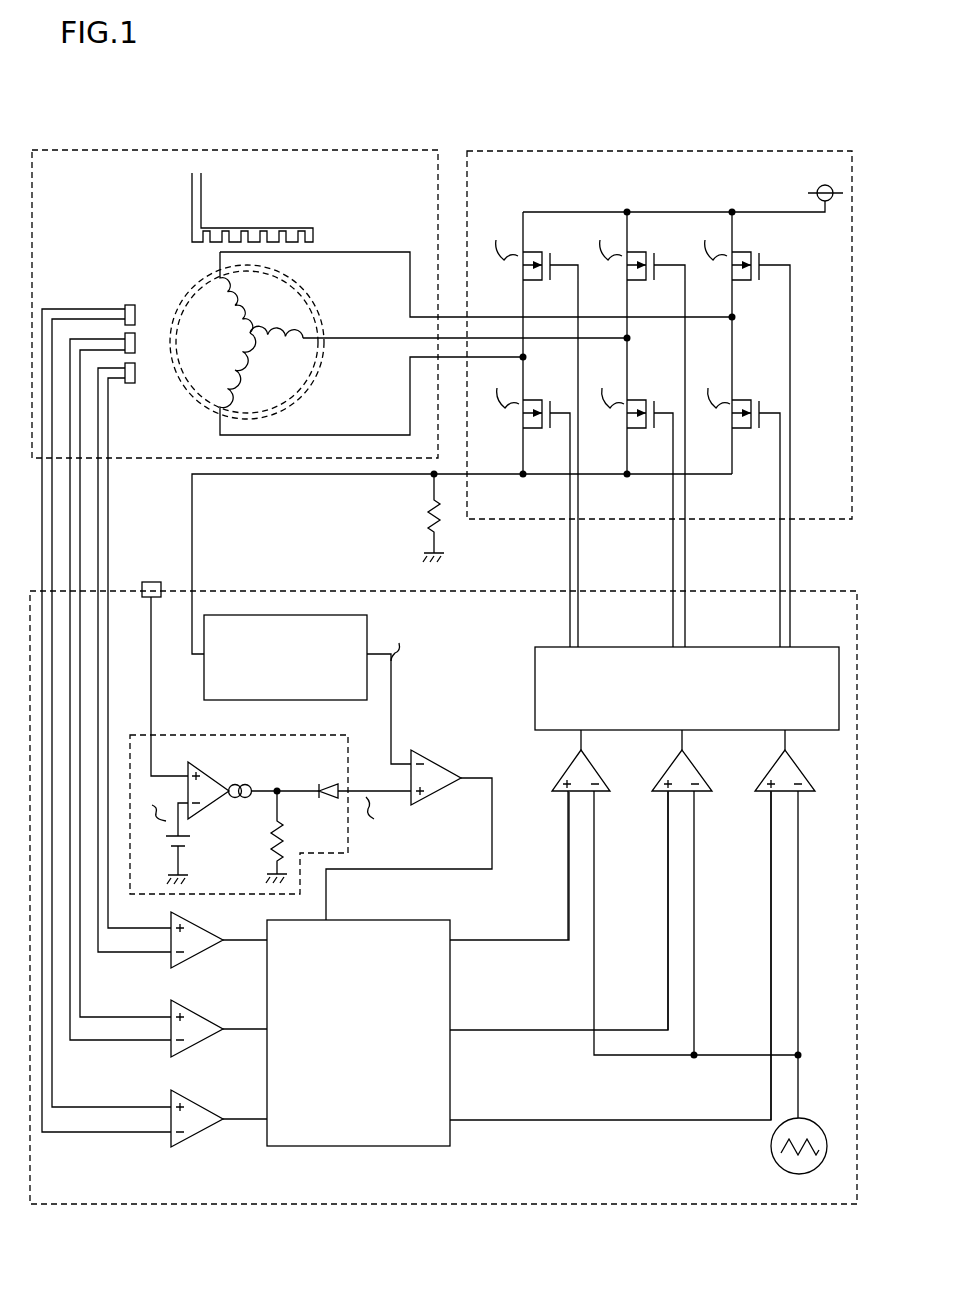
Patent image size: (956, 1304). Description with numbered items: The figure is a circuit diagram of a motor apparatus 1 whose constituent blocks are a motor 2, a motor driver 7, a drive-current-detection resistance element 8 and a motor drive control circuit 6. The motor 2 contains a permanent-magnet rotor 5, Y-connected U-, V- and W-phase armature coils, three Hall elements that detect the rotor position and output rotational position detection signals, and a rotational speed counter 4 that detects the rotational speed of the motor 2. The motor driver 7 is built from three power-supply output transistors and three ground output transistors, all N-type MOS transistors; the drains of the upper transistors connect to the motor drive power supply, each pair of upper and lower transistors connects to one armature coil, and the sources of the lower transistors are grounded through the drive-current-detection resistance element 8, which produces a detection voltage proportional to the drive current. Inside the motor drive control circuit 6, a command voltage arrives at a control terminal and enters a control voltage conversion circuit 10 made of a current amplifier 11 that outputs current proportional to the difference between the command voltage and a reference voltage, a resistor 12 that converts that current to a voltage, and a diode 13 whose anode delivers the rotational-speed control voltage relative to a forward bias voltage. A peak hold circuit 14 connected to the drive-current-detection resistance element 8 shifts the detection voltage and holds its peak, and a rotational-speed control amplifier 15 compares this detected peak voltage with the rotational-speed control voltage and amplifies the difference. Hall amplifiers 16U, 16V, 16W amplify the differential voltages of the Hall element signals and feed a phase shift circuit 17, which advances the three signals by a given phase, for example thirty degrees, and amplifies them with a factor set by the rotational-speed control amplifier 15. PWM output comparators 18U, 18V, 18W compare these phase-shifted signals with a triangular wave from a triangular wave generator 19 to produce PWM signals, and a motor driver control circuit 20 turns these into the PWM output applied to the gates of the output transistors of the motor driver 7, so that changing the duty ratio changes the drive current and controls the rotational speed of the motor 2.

The motor apparatus 1 is at (458, 119).
The motor 2 is at (250, 152).
The rotational speed counter 4 is at (310, 232).
The rotor 5 is at (196, 402).
The motor drive control circuit 6 is at (357, 589).
The motor driver 7 is at (856, 318).
The drive-current-detection resistance element 8 is at (410, 518).
The control voltage conversion circuit 10 is at (345, 735).
The current amplifier 11 is at (221, 772).
The resistor 12 is at (267, 840).
The diode 13 is at (320, 782).
The peak hold circuit 14 is at (329, 615).
The rotational-speed control amplifier 15 is at (445, 756).
The Hall amplifier 16U is at (202, 924).
The Hall amplifier 16V is at (202, 1014).
The Hall amplifier 16W is at (199, 1104).
The phase shift circuit 17 is at (303, 1147).
The PWM output comparator 18U is at (606, 794).
The PWM output comparator 18V is at (707, 794).
The PWM output comparator 18W is at (810, 794).
The triangular wave generator 19 is at (770, 1142).
The motor driver control circuit 20 is at (538, 642).